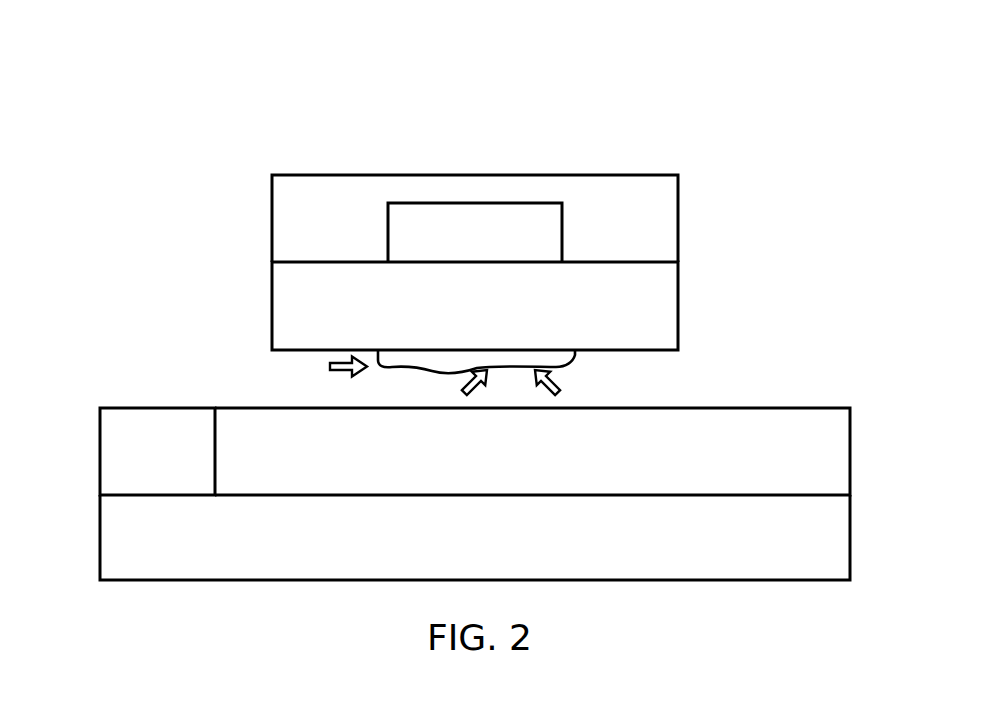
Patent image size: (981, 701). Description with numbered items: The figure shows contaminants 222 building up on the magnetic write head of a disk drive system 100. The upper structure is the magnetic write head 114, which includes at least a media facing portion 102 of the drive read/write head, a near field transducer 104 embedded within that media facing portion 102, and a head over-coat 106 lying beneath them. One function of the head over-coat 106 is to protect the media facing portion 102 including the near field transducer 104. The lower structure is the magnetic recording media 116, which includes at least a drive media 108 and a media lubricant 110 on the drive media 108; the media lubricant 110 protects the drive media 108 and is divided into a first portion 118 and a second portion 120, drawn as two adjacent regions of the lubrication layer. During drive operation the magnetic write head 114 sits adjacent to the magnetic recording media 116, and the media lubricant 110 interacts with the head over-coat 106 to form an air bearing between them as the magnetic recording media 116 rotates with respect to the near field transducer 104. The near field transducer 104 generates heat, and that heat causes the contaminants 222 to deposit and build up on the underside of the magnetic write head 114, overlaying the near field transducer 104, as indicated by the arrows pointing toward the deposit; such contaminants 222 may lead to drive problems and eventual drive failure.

The disk drive system 100 is at (108, 123).
The media facing portion 102 is at (346, 230).
The near field transducer 104 is at (497, 246).
The head over-coat 106 is at (346, 320).
The drive media 108 is at (497, 548).
The media lubricant 110 is at (873, 407).
The magnetic write head 114 is at (368, 262).
The magnetic recording media 116 is at (478, 493).
The first portion 118 is at (497, 462).
The second portion 120 is at (179, 462).
The contaminants 222 is at (560, 355).